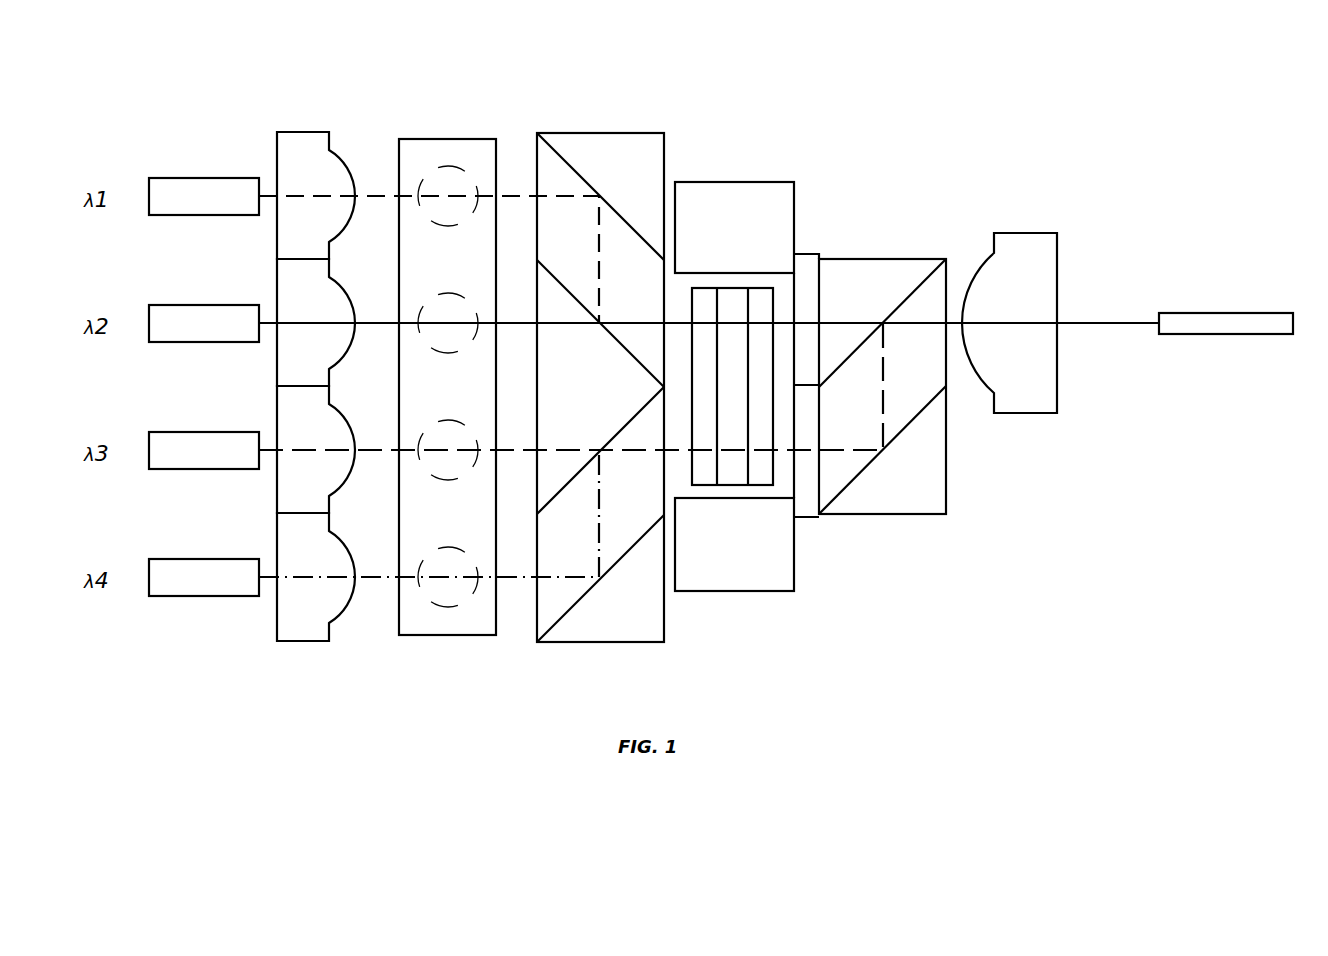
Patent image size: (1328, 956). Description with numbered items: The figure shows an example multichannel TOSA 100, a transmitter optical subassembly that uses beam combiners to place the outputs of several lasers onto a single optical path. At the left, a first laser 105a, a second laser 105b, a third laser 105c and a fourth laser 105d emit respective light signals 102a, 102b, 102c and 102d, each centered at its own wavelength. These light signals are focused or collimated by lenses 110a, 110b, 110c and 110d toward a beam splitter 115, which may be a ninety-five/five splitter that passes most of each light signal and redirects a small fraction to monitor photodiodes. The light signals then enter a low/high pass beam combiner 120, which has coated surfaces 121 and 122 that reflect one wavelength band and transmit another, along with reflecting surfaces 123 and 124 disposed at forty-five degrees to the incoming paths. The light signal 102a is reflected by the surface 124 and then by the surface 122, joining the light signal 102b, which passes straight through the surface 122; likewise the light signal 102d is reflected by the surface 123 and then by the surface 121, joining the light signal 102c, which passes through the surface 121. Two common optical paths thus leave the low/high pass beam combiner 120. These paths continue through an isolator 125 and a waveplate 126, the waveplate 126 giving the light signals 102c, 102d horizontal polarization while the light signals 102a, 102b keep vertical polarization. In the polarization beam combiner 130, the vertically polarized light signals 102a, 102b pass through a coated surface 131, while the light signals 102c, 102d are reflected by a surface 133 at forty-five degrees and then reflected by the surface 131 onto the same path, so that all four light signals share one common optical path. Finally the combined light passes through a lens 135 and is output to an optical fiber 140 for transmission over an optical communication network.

The multichannel TOSA 100 is at (1204, 142).
The light signal 102a is at (290, 197).
The light signal 102b is at (290, 324).
The light signal 102c is at (290, 451).
The light signal 102d is at (290, 578).
The first laser 105a is at (180, 198).
The second laser 105b is at (180, 325).
The third laser 105c is at (180, 452).
The fourth laser 105d is at (180, 579).
The lens 110a is at (318, 183).
The lens 110b is at (318, 310).
The lens 110c is at (318, 437).
The lens 110d is at (318, 564).
The beam splitter 115 is at (412, 620).
The low/high pass beam combiner 120 is at (645, 618).
The surface 121 is at (578, 468).
The surface 122 is at (580, 303).
The surface 123 is at (558, 625).
The surface 124 is at (599, 208).
The isolator 125 is at (788, 543).
The waveplate 126 is at (799, 269).
The polarization beam combiner 130 is at (930, 502).
The surface 131 is at (851, 354).
The surface 133 is at (852, 483).
The lens 135 is at (1047, 342).
The optical fiber 140 is at (1208, 325).